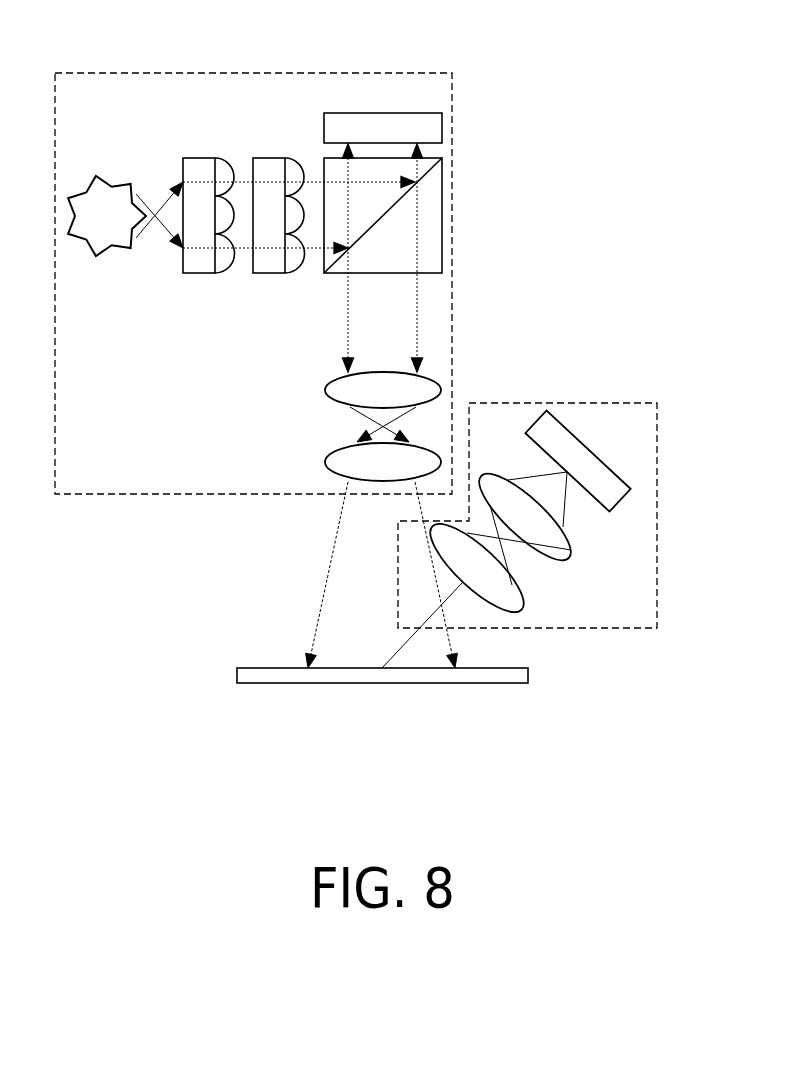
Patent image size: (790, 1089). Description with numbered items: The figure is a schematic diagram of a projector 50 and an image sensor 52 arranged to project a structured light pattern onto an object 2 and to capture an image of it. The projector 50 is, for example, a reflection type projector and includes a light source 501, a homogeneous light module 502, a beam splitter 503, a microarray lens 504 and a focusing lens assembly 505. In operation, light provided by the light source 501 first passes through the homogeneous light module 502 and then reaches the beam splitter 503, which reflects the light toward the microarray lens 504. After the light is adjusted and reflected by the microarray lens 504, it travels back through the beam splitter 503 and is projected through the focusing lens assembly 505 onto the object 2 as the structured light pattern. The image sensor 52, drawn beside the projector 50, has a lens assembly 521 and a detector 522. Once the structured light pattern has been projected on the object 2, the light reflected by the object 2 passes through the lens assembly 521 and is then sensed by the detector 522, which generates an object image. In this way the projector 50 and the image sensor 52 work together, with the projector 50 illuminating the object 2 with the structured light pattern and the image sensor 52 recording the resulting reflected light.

The projector 50 is at (87, 73).
The image sensor 52 is at (658, 423).
The light source 501 is at (108, 176).
The homogeneous light module 502 is at (301, 153).
The beam splitter 503 is at (338, 275).
The microarray lens 504 is at (333, 113).
The focusing lens assembly 505 is at (333, 380).
The lens assembly 521 is at (570, 558).
The detector 522 is at (611, 513).
The object 2 is at (498, 684).